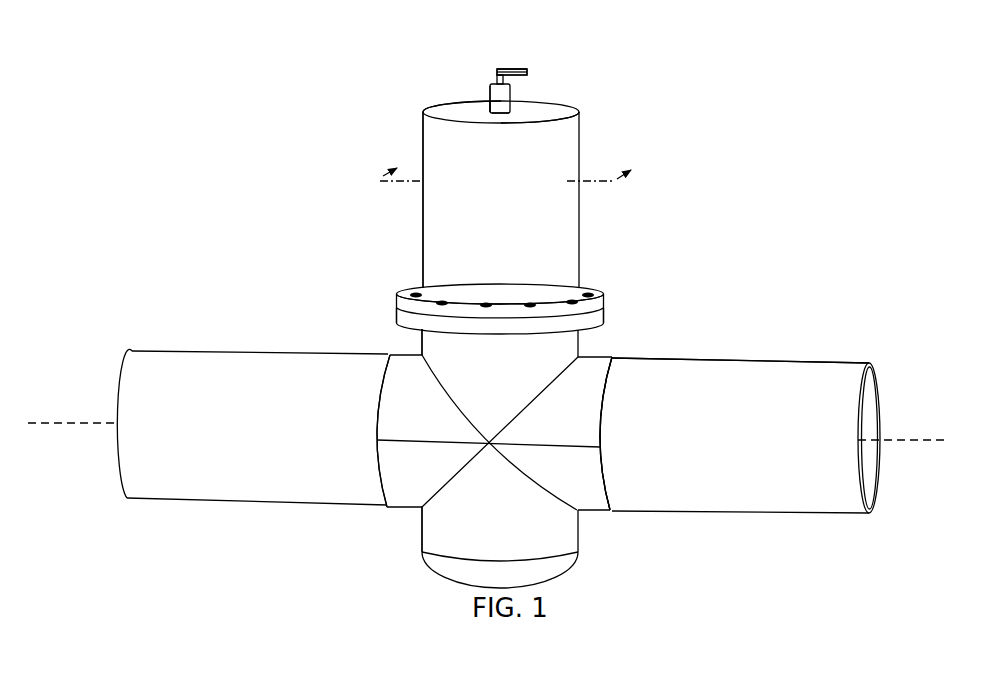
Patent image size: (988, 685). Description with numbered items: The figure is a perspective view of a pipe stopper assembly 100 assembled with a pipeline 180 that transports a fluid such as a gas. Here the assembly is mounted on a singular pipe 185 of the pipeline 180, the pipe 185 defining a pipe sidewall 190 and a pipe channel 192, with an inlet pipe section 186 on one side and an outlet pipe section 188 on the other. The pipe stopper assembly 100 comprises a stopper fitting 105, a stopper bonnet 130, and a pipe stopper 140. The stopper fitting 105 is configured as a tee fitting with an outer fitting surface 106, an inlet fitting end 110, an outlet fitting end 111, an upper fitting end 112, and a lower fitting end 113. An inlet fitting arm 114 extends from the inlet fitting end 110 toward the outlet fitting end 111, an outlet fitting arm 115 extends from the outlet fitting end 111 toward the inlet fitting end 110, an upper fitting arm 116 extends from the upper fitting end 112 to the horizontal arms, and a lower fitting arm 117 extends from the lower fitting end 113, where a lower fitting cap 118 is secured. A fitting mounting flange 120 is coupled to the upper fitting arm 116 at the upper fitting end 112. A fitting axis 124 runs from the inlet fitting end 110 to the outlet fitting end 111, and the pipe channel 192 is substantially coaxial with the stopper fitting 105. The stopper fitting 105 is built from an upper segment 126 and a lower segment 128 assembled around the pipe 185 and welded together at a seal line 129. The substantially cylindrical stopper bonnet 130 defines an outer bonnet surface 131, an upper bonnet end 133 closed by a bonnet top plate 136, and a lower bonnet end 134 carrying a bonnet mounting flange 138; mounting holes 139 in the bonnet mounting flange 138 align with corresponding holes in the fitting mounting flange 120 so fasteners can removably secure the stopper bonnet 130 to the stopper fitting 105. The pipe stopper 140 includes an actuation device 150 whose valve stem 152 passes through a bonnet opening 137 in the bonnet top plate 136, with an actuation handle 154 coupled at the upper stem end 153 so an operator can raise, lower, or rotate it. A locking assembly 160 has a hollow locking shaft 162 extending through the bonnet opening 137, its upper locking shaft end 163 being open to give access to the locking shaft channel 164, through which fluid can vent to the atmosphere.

The pipe stopper assembly 100 is at (628, 60).
The stopper fitting 105 is at (413, 500).
The outer fitting surface 106 is at (572, 490).
The inlet fitting end 110 is at (378, 399).
The outlet fitting end 111 is at (602, 419).
The upper fitting end 112 is at (525, 338).
The lower fitting end 113 is at (513, 560).
The inlet fitting arm 114 is at (397, 382).
The outlet fitting arm 115 is at (605, 387).
The upper fitting arm 116 is at (430, 350).
The lower fitting arm 117 is at (458, 556).
The lower fitting cap 118 is at (550, 569).
The fitting mounting flange 120 is at (405, 320).
The fitting axis 124 is at (905, 440).
The upper segment 126 is at (596, 386).
The lower segment 128 is at (422, 548).
The seal line 129 is at (413, 443).
The stopper bonnet 130 is at (572, 214).
The outer bonnet surface 131 is at (433, 216).
The upper bonnet end 133 is at (433, 103).
The lower bonnet end 134 is at (458, 302).
The bonnet top plate 136 is at (555, 107).
The bonnet opening 137 is at (507, 115).
The bonnet mounting flange 138 is at (600, 302).
The mounting holes 139 is at (593, 276).
The pipe stopper 140 is at (496, 58).
The actuation device 150 is at (508, 52).
The valve stem 152 is at (529, 71).
The upper stem end 153 is at (555, 66).
The actuation handle 154 is at (516, 69).
The locking assembly 160 is at (481, 111).
The locking shaft 162 is at (503, 97).
The upper locking shaft end 163 is at (490, 88).
The locking shaft channel 164 is at (485, 71).
The pipeline 180 is at (200, 334).
The pipe 185 is at (787, 372).
The inlet pipe section 186 is at (163, 491).
The outlet pipe section 188 is at (770, 503).
The pipe sidewall 190 is at (232, 491).
The pipe channel 192 is at (870, 401).